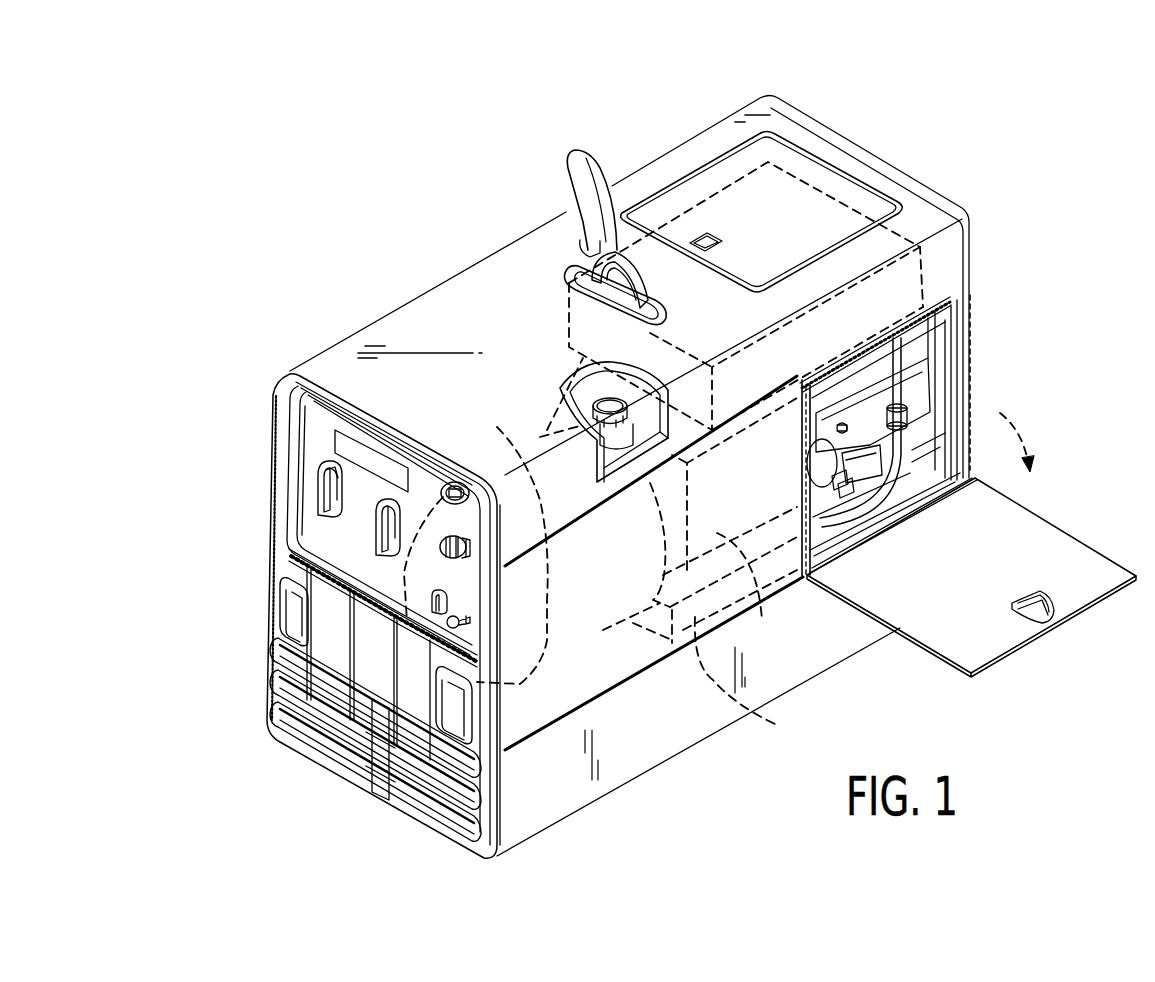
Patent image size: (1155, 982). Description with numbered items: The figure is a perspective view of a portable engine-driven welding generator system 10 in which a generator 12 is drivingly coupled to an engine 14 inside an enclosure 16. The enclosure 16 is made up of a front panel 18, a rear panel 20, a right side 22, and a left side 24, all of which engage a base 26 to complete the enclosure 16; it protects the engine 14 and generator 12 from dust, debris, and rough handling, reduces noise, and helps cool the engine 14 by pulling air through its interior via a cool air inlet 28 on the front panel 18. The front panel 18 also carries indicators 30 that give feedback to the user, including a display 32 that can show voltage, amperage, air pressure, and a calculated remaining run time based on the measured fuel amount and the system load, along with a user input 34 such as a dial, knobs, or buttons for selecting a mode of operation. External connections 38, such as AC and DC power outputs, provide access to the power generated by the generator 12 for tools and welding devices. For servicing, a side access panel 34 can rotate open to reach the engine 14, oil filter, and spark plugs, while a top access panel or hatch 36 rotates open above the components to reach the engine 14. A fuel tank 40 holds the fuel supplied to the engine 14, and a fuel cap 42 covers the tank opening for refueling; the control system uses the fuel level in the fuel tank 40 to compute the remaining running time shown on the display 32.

The portable engine-driven welding generator system 10 is at (394, 155).
The generator 12 is at (493, 521).
The engine 14 is at (700, 526).
The enclosure 16 is at (478, 314).
The front panel 18 is at (320, 432).
The rear panel 20 is at (866, 150).
The right side 22 is at (952, 250).
The left side 24 is at (575, 232).
The base 26 is at (660, 737).
The cool air inlet 28 is at (352, 755).
The indicators 30 is at (440, 486).
The display 32 is at (375, 440).
The user input / side access panel 34 is at (372, 536).
The top access panel or hatch 36 is at (826, 150).
The external connections 38 is at (300, 625).
The fuel tank 40 is at (772, 724).
The fuel cap 42 is at (607, 404).